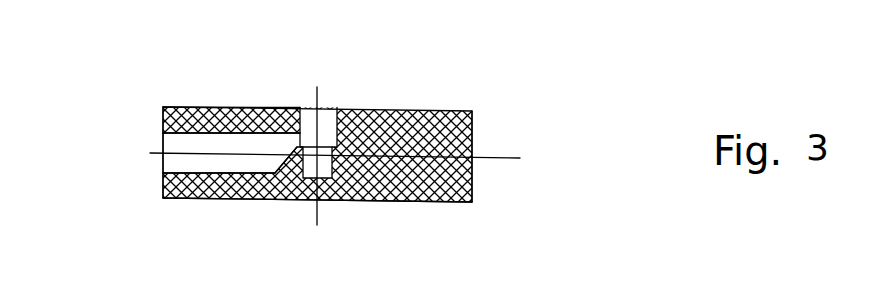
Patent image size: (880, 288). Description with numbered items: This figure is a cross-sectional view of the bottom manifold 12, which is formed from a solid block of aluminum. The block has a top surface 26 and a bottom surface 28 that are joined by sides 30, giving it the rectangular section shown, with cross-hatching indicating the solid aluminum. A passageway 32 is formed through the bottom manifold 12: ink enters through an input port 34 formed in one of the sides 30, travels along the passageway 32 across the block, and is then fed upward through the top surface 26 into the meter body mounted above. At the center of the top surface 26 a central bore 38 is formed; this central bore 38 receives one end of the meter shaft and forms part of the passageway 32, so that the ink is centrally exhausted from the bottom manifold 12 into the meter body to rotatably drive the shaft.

The bottom manifold 12 is at (518, 100).
The top surface 26 is at (426, 106).
The bottom surface 28 is at (434, 212).
The sides 30 is at (152, 193).
The passageway 32 is at (296, 132).
The input port 34 is at (163, 142).
The central bore 38 is at (337, 111).